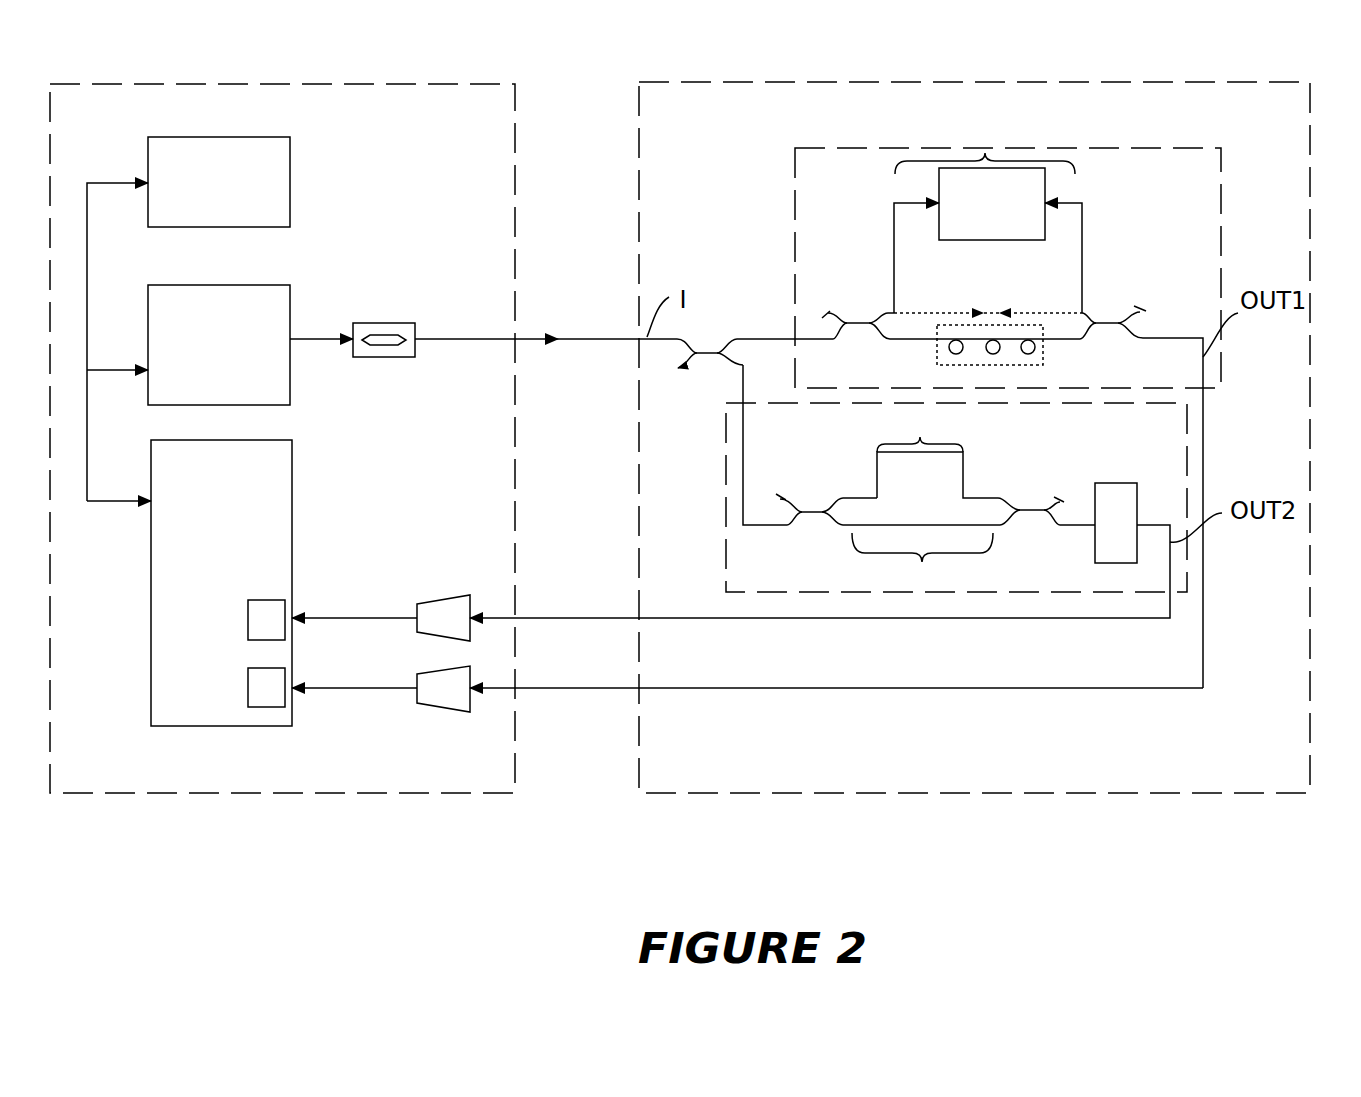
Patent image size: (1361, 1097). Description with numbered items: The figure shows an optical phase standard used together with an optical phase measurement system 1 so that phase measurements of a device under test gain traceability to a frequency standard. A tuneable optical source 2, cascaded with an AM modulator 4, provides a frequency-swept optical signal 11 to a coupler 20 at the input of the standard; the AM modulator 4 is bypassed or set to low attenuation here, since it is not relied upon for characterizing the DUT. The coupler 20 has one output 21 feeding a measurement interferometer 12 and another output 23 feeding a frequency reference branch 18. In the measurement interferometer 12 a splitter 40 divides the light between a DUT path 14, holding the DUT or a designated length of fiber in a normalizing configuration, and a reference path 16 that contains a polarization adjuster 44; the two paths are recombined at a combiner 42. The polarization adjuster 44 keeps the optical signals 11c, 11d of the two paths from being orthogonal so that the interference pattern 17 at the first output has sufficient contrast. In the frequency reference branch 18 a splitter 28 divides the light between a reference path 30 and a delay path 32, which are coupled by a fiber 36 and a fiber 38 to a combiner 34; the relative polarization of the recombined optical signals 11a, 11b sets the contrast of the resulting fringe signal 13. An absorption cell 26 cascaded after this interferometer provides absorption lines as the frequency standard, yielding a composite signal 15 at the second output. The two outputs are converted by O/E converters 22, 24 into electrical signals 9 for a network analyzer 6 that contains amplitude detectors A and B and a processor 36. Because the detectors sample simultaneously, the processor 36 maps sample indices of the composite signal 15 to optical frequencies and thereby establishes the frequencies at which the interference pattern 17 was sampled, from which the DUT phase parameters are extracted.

The optical phase measurement system 1 is at (512, 104).
The tuneable optical source 2 is at (290, 310).
The AM modulator 4 is at (383, 323).
The network analyzer 6 is at (216, 709).
The electrical signal 9 is at (366, 614).
The optical signal 11 is at (602, 337).
The optical signal 11a is at (1007, 497).
The optical signal 11b is at (1007, 526).
The optical signal 11c is at (1102, 318).
The optical signal 11d is at (1098, 331).
The measurement interferometer 12 is at (1221, 173).
The fringe signal 13 is at (1060, 528).
The DUT path 14 is at (983, 157).
The composite signal 15 is at (1095, 619).
The reference path 16 is at (953, 322).
The interference pattern 17 is at (1158, 334).
The frequency reference branch 18 is at (726, 535).
The coupler 20 is at (702, 348).
The output 21 is at (737, 339).
The O/E converter 22 is at (447, 596).
The output 23 is at (727, 366).
The O/E converter 24 is at (440, 704).
The absorption cell 26 is at (1104, 538).
The splitter 28 is at (812, 510).
The reference path 30 is at (922, 562).
The delay path 32 is at (920, 437).
The combiner 34 is at (1040, 506).
The processor 36 is at (290, 170).
The fiber 38 is at (935, 455).
The splitter 40 is at (858, 327).
The combiner 42 is at (1112, 327).
The polarization adjuster 44 is at (993, 352).